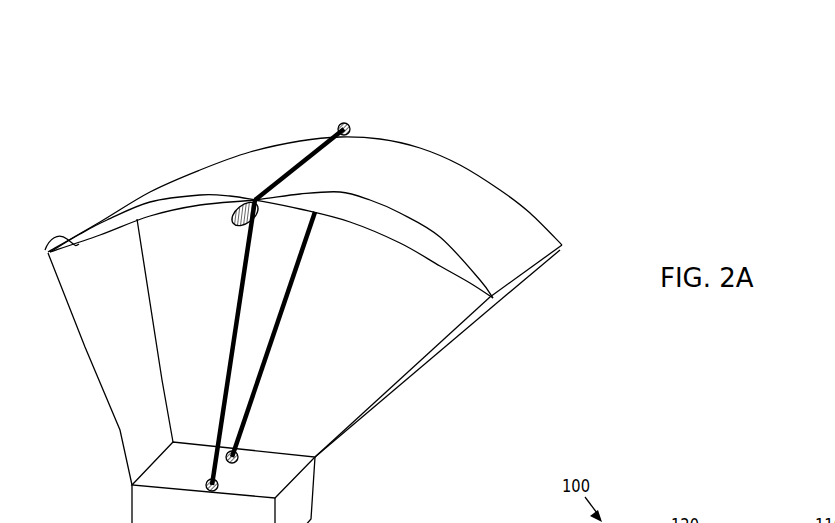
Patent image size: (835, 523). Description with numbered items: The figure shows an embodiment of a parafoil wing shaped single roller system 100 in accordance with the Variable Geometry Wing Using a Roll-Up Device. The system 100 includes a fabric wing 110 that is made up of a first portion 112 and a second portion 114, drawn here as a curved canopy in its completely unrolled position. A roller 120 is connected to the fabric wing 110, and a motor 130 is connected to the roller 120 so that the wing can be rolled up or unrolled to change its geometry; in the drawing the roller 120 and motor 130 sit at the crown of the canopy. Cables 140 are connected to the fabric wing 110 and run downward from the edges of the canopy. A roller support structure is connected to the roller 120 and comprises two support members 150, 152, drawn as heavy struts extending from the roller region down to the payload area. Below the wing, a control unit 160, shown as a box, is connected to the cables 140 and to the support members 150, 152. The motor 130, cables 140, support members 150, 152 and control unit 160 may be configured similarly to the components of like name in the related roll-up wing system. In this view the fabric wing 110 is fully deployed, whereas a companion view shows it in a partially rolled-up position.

The parafoil wing shaped single roller system 100 is at (93, 75).
The fabric wing 110 is at (439, 127).
The first portion 112 is at (458, 180).
The second portion 114 is at (200, 167).
The roller 120 is at (316, 142).
The motor 130 is at (232, 218).
The cables 140 is at (84, 346).
The support member 150 is at (223, 373).
The support member 152 is at (263, 368).
The control unit 160 is at (290, 506).